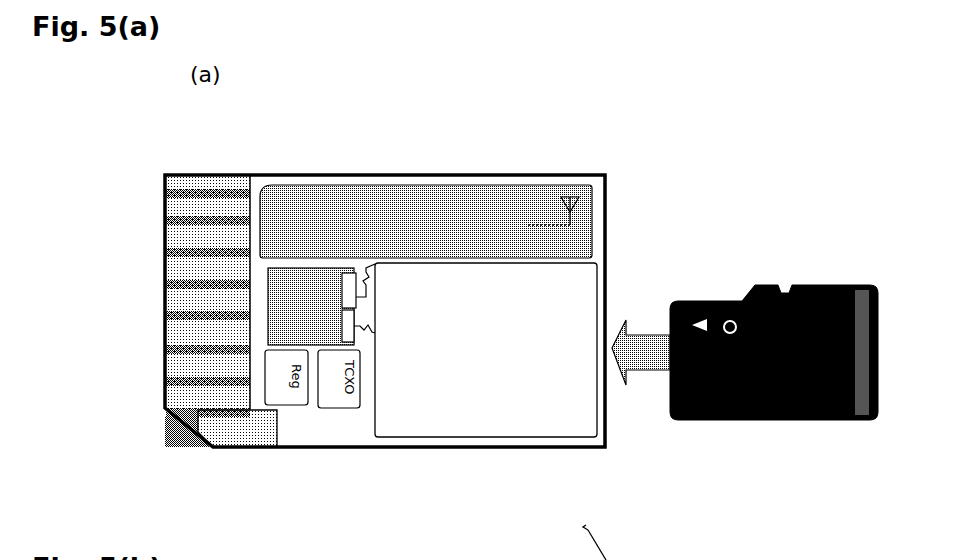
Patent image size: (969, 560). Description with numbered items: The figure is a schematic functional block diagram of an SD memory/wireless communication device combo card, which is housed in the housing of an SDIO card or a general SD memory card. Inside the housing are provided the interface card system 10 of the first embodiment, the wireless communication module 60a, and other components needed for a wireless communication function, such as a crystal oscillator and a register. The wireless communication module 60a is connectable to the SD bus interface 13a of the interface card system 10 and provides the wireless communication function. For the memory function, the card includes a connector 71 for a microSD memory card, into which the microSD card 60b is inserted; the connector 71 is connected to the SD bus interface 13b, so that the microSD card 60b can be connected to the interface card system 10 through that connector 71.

The interface card system 10 is at (310, 350).
The wireless communication module 60a is at (460, 184).
The SD bus interface 13a is at (341, 297).
The SD bus interface 13b is at (341, 325).
The connector for a microSD memory card 71 is at (587, 412).
The microSD card 60b is at (768, 421).